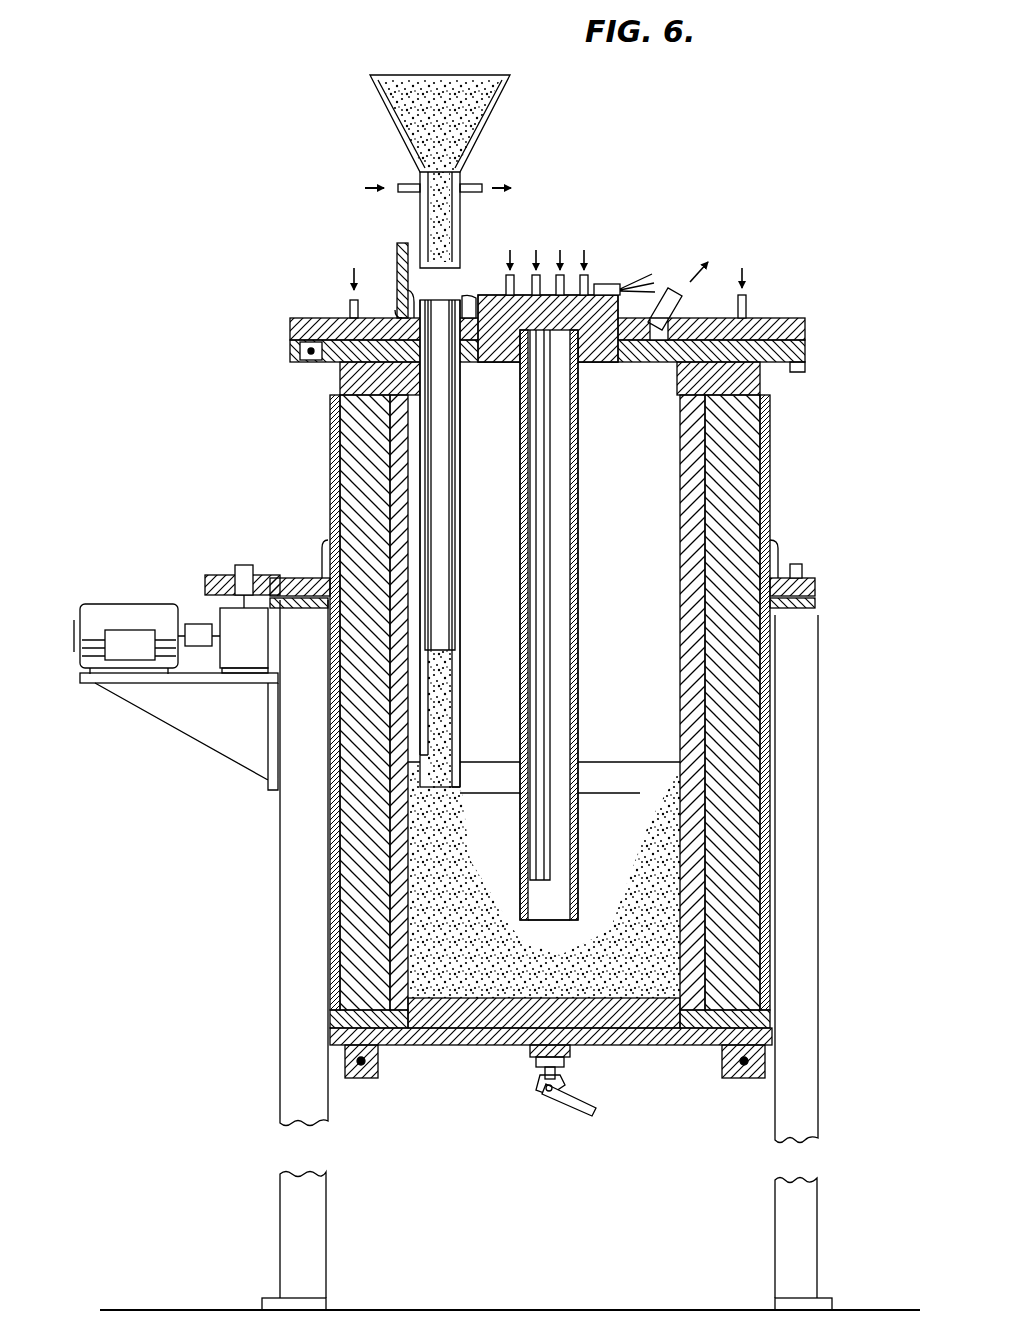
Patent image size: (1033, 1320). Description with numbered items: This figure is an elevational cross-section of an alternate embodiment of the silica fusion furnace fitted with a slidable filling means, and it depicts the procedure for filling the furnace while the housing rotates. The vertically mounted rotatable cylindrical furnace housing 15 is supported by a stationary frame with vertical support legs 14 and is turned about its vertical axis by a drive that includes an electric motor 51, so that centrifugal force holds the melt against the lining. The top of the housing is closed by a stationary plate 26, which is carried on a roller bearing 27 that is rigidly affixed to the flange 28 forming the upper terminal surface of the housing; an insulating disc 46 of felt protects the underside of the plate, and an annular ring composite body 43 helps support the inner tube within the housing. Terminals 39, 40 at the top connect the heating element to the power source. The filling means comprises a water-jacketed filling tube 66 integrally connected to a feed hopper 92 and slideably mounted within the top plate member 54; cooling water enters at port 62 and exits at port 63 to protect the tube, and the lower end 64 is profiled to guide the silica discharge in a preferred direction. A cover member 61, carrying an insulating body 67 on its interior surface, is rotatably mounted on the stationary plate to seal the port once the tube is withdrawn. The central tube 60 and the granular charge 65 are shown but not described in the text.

The feed hopper 92 is at (400, 92).
The cooling water inlet port 62 is at (418, 192).
The cooling water outlet port 63 is at (470, 192).
The filling tube 66 is at (420, 232).
The cover member 61 is at (397, 262).
The top plate member 54 is at (398, 298).
The insulating body 67 is at (478, 300).
The terminal 40 is at (490, 294).
The terminal 39 is at (600, 284).
The stationary plate 26 is at (805, 330).
The roller bearing 27 is at (805, 350).
The flange 28 is at (805, 368).
The insulating disc 46 is at (340, 362).
The annular ring composite body 43 is at (340, 385).
The cylindrical furnace housing 15 is at (772, 496).
The electric motor 51 is at (160, 604).
The central tube 60 is at (578, 590).
The lower end of filling tube 64 is at (460, 790).
The granular material 65 is at (452, 890).
The vertical support legs 14 is at (280, 1000).